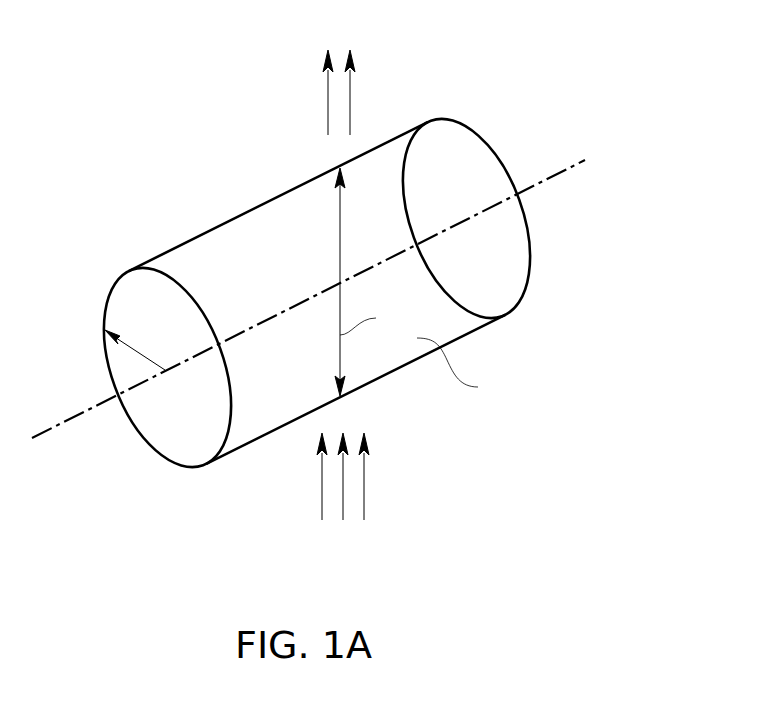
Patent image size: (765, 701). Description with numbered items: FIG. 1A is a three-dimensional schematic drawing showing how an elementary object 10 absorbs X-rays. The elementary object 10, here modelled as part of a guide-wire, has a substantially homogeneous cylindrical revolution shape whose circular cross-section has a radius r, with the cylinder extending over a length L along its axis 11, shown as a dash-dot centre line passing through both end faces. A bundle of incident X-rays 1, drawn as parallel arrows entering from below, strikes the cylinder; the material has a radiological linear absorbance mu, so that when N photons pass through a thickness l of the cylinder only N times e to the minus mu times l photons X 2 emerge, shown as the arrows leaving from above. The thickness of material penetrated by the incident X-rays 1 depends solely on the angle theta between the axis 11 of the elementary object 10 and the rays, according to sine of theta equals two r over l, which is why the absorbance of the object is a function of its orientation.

The incident X-rays 1 is at (370, 526).
The emerging photons X 2 is at (357, 44).
The elementary object 10 is at (458, 152).
The axis 11 is at (565, 170).